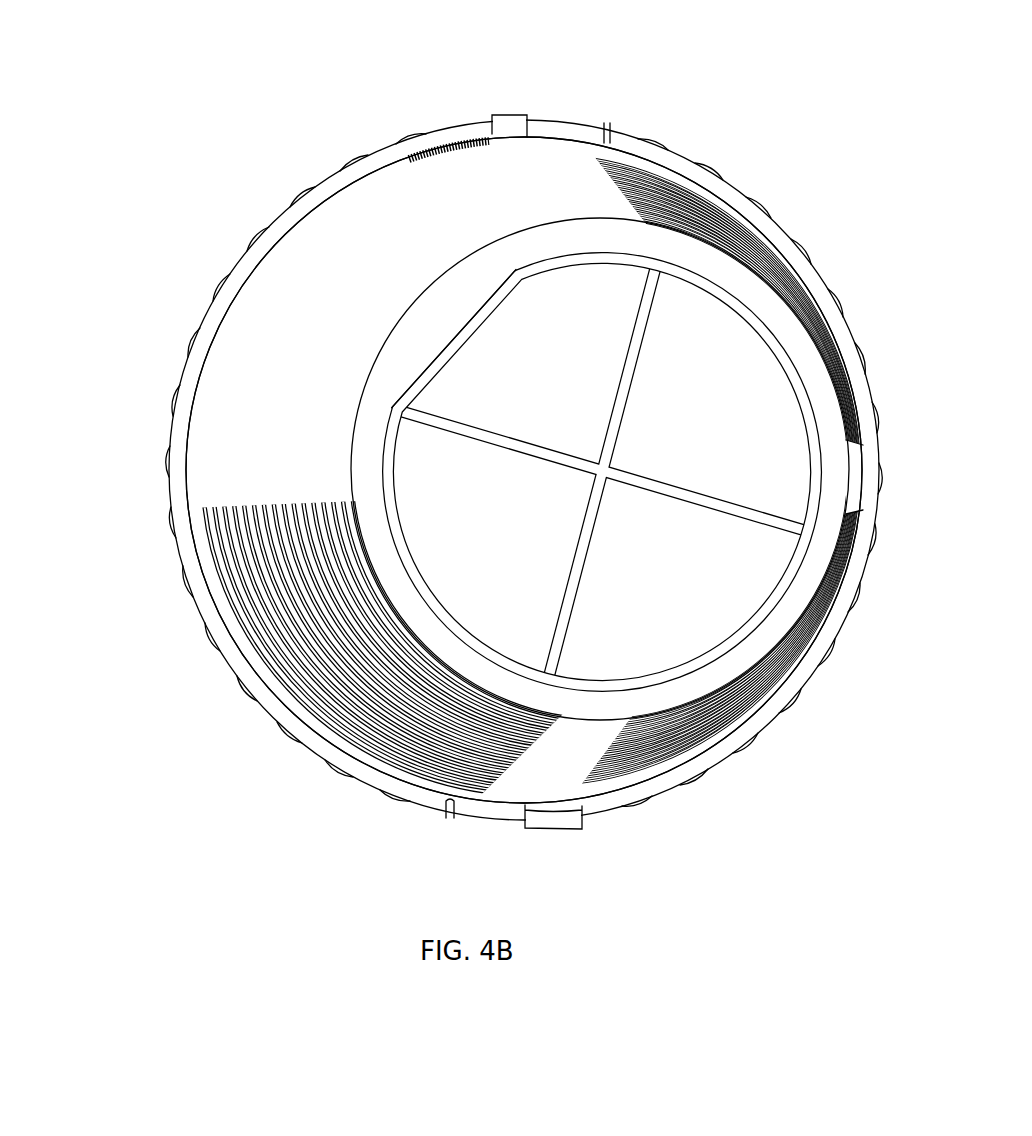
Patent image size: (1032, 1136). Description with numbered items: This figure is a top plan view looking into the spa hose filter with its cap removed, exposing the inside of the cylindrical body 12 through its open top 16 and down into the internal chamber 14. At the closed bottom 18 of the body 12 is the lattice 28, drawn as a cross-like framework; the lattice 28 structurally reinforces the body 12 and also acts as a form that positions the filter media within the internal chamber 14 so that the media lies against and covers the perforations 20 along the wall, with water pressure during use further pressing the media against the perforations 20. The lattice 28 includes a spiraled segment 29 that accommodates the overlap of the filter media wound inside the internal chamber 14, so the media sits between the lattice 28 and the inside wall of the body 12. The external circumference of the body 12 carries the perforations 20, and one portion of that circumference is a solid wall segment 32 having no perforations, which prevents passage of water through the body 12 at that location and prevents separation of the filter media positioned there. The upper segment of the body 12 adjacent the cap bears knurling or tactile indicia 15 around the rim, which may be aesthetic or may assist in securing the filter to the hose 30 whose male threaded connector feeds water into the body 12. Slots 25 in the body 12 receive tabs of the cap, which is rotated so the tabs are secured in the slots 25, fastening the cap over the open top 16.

The cylindrical body 12 is at (809, 120).
The internal chamber 14 is at (397, 249).
The tactile indicia 15 is at (416, 128).
The open top 16 is at (222, 302).
The closed bottom 18 is at (693, 560).
The perforations 20 is at (612, 133).
The slots 25 is at (553, 130).
The lattice 28 is at (745, 292).
The spiraled segment 29 is at (468, 318).
The hose 30 is at (270, 495).
The solid wall segment 32 is at (270, 345).